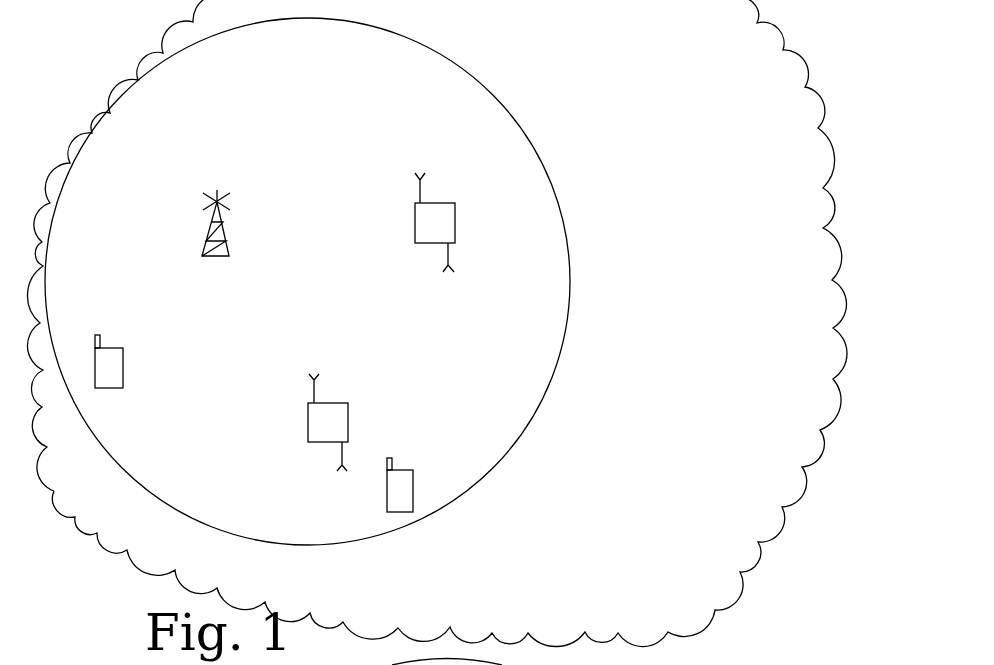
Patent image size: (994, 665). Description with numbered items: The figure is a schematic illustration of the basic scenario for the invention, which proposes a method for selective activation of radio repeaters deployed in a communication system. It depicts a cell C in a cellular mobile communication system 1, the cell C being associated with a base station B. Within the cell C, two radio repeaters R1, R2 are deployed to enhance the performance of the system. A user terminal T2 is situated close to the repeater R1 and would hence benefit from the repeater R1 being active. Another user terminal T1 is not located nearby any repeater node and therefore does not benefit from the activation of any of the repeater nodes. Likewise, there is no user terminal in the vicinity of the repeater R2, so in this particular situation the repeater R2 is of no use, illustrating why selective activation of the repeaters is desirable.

The cellular mobile communication system 1 is at (110, 535).
The cell C is at (136, 110).
The base station B is at (216, 196).
The radio repeater R1 is at (312, 425).
The radio repeater R2 is at (440, 222).
The user terminal T1 is at (110, 376).
The user terminal T2 is at (410, 484).